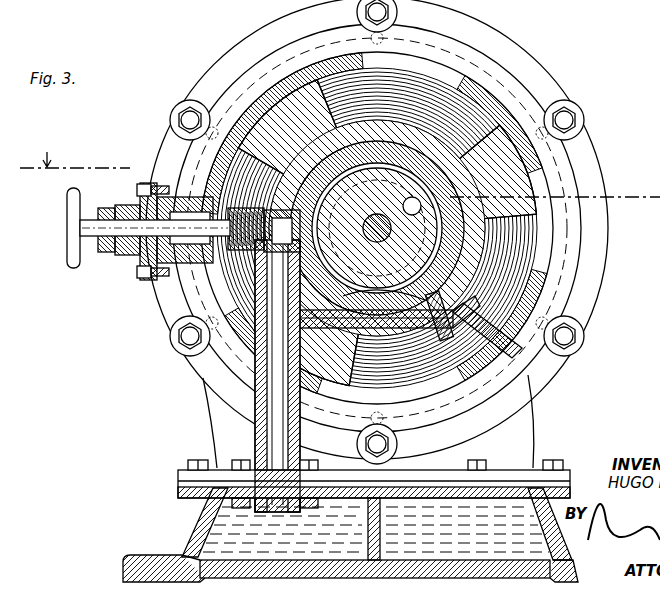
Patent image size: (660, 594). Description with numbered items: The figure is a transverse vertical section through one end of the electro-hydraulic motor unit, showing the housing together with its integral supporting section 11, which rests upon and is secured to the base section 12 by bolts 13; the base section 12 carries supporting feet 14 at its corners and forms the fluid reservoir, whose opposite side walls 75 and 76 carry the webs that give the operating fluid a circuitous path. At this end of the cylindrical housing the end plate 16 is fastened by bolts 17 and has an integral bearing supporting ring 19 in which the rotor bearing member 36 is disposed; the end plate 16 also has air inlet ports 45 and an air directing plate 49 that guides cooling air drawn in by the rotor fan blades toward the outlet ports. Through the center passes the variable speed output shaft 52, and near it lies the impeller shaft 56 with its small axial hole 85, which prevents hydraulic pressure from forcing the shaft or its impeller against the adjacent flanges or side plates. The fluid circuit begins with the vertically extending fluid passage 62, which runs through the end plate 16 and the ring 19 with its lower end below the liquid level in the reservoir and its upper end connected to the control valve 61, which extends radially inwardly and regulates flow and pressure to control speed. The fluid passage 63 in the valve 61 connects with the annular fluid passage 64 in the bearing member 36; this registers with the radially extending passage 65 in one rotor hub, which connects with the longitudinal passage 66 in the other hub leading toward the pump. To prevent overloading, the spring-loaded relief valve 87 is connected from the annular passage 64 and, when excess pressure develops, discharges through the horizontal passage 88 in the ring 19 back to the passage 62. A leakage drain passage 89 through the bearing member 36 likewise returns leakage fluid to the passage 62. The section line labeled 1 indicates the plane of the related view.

The section line 1 is at (75, 152).
The supporting section 11 is at (530, 426).
The base section 12 is at (200, 522).
The bolts 13 is at (188, 465).
The supporting feet 14 is at (156, 2).
The end plate 16 is at (220, 108).
The bolts 17 is at (386, 14).
The bearing supporting ring 19 is at (483, 214).
The rotor bearing member 36 is at (485, 262).
The air inlet ports 45 is at (292, 80).
The air directing plate 49 is at (303, 80).
The variable speed output shaft 52 is at (398, 313).
The impeller shaft 56 is at (470, 60).
The control valve 61 is at (68, 233).
The vertically extending fluid passage 62 is at (275, 438).
The fluid passage 63 is at (250, 195).
The annular fluid passage 64 is at (443, 230).
The radially extending passage 65 is at (555, 206).
The passage 66 is at (413, 205).
The side wall 75 is at (560, 480).
The side wall 76 is at (196, 540).
The small hole 85 is at (505, 90).
The relief valve 87 is at (463, 307).
The passage 88 is at (352, 320).
The leakage drain passage 89 is at (457, 288).